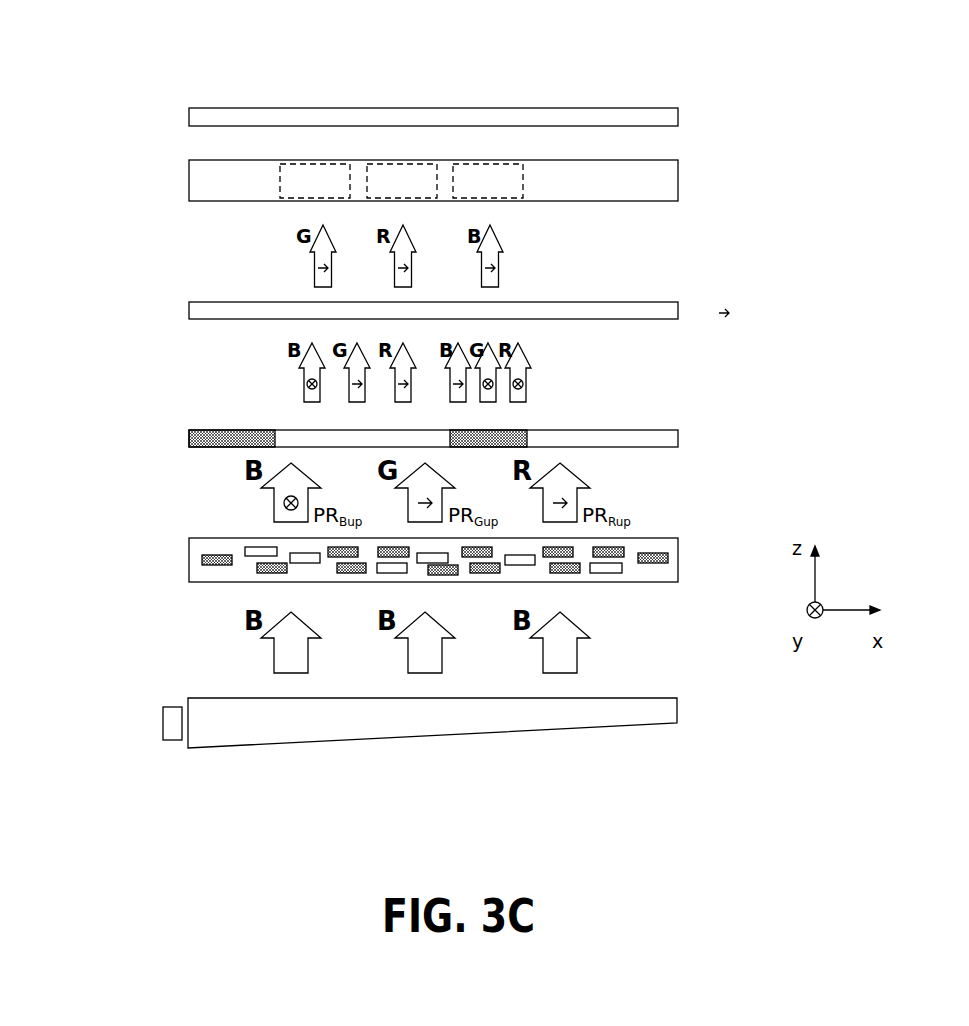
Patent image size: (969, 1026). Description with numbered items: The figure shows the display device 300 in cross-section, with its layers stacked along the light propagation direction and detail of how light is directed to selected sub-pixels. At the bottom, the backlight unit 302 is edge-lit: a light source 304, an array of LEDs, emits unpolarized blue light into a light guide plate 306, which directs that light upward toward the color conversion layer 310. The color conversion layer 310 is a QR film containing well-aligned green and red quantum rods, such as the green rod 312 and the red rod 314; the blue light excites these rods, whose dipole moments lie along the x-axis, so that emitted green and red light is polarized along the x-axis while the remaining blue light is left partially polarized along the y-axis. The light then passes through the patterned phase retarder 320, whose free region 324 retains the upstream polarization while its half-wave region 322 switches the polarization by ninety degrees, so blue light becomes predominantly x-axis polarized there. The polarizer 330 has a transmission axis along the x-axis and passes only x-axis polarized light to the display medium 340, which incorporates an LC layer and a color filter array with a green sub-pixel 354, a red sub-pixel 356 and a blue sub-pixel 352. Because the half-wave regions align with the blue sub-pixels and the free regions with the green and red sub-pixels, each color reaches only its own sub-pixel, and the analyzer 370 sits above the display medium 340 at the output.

The display device 300 is at (67, 23).
The analyzer 370 is at (678, 117).
The display medium 340 is at (678, 181).
The green sub-pixel 354 is at (335, 190).
The red sub-pixel 356 is at (422, 190).
The blue sub-pixel 352 is at (508, 190).
The polarizer 330 is at (678, 310).
The patterned phase retarder 320 is at (678, 438).
The free region 324 is at (283, 429).
The half-wave region 322 is at (522, 429).
The color conversion layer 310 is at (678, 546).
The green rod 312 is at (306, 567).
The red rod 314 is at (488, 575).
The light guide plate 306 is at (677, 715).
The light source 304 is at (160, 723).
The backlight unit 302 is at (416, 736).